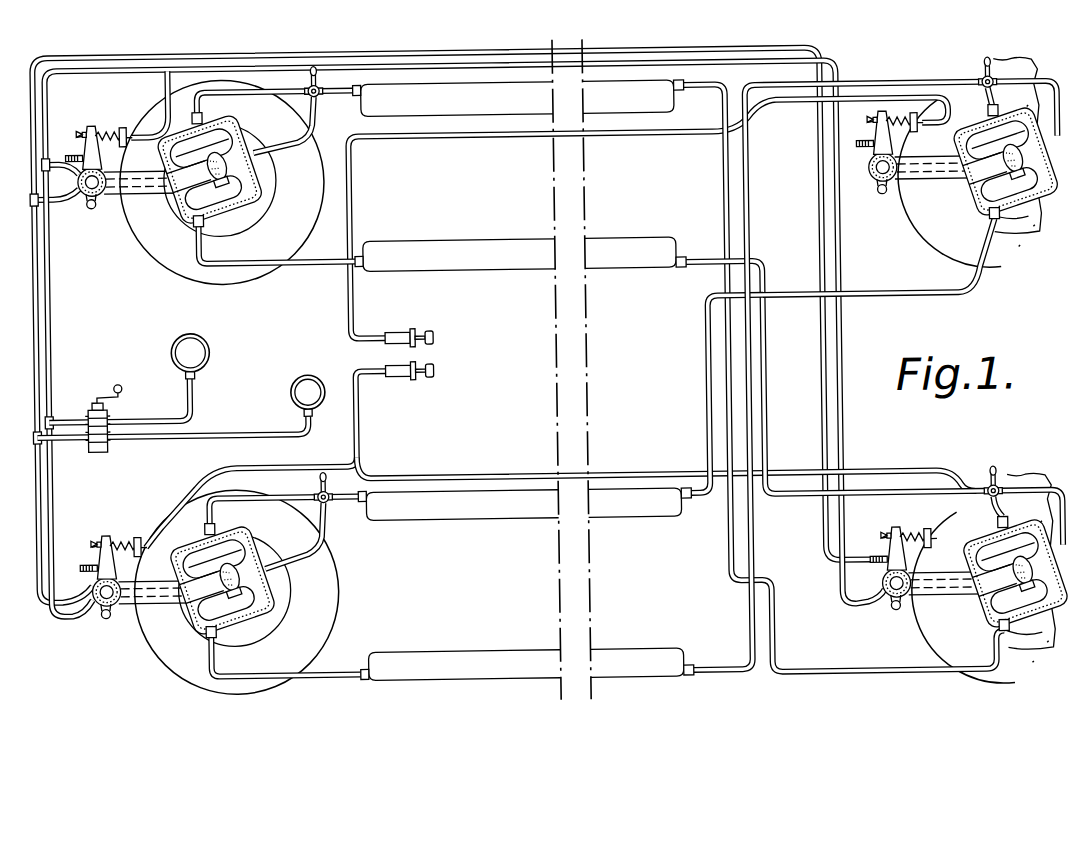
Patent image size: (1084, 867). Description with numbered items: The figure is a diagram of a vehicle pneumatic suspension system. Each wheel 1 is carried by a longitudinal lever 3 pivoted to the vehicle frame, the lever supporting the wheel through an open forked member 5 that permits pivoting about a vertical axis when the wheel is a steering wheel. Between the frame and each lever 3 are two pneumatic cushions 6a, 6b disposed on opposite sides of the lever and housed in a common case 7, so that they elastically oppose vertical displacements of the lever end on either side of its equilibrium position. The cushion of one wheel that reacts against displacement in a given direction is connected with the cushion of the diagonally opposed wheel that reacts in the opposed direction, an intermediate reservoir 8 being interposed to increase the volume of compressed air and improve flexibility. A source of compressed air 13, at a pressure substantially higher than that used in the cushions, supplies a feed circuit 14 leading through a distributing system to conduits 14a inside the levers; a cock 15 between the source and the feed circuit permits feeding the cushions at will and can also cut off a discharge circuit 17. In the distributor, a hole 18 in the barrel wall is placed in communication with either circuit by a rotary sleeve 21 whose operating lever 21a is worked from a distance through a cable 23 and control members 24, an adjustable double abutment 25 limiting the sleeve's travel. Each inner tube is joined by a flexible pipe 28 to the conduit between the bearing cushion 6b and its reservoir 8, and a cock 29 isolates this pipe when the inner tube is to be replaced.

The wheel 1 is at (292, 226).
The longitudinal lever 3 is at (138, 591).
The open forked member 5 is at (265, 589).
The pneumatic cushion 6a is at (226, 604).
The bearing cushion 6b is at (214, 558).
The common case 7 is at (235, 580).
The intermediate reservoir 8 is at (461, 249).
The source of compressed air 13 is at (201, 345).
The feed circuit 14 is at (42, 194).
The conduit 14a is at (153, 584).
The cock 15 is at (92, 391).
The discharge circuit 17 is at (51, 157).
The hole 18 is at (102, 196).
The rotary sleeve 21 is at (901, 608).
The operating lever 21a is at (899, 560).
The cable 23 is at (362, 427).
The control members 24 is at (438, 372).
The adjustable double abutment 25 is at (931, 551).
The flexible pipe 28 is at (282, 147).
The cock 29 is at (325, 92).